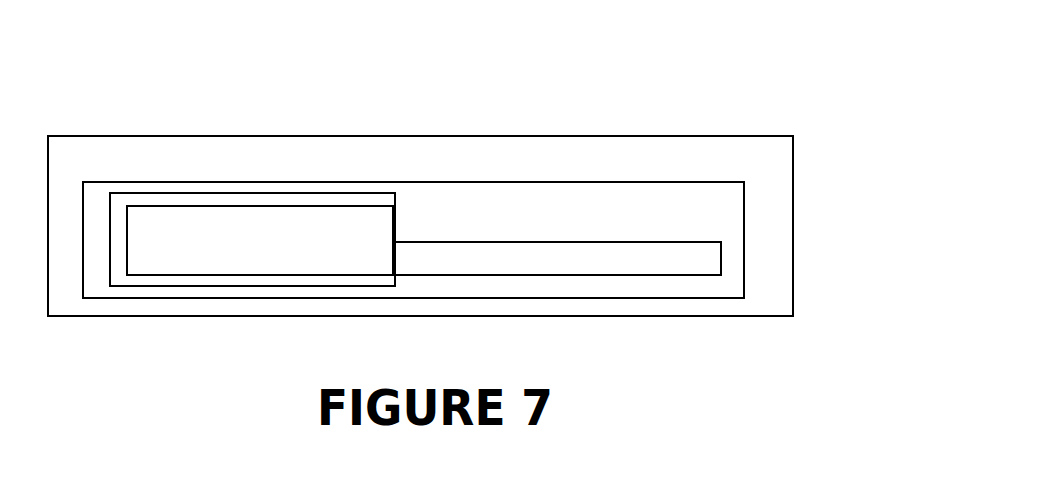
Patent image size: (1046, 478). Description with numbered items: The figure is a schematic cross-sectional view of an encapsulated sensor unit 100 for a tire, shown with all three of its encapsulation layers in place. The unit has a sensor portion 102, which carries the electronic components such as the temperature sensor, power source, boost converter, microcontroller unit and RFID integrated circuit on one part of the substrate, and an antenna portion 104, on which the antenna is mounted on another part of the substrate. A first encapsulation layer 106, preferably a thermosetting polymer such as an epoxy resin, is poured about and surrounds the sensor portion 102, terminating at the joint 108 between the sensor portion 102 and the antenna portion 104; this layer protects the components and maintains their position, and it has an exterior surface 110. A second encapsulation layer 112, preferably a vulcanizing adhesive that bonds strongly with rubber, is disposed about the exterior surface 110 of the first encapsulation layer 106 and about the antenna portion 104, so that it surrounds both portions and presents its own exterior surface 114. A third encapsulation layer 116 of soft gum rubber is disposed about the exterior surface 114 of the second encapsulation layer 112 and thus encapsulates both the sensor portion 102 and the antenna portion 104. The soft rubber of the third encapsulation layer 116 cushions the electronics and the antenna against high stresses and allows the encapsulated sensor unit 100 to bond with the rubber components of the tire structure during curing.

The encapsulated sensor unit 100 is at (592, 98).
The sensor portion 102 is at (332, 275).
The antenna portion 104 is at (458, 275).
The first encapsulation layer 106 is at (353, 198).
The joint 108 is at (395, 237).
The exterior surface 110 is at (237, 193).
The second encapsulation layer 112 is at (662, 197).
The exterior surface 114 is at (744, 215).
The third encapsulation layer 116 is at (93, 155).